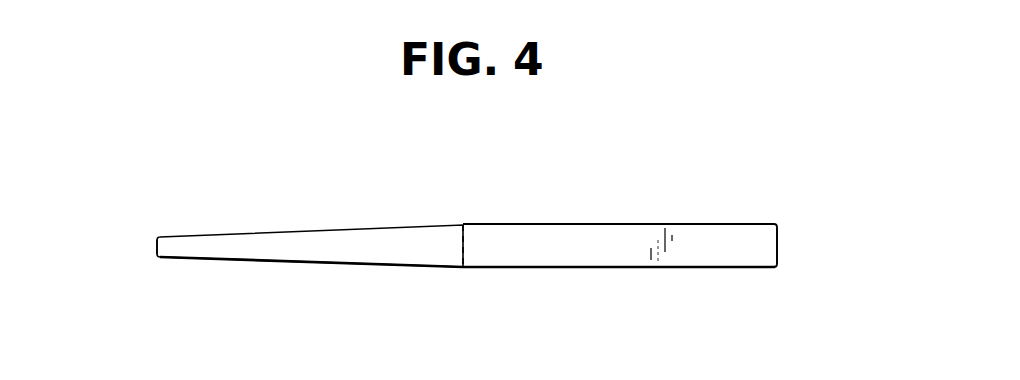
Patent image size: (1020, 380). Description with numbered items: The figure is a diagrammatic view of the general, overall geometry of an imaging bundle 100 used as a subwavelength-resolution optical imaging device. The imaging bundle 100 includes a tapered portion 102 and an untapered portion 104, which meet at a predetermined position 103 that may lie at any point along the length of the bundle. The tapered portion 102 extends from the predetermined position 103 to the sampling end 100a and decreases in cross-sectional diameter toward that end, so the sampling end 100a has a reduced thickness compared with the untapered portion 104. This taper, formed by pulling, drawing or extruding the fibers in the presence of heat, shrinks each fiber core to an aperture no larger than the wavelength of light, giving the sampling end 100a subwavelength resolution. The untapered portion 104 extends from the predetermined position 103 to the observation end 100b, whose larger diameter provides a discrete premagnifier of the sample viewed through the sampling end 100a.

The imaging bundle 100 is at (465, 228).
The sampling end 100a is at (153, 244).
The observation end 100b is at (778, 243).
The tapered portion 102 is at (263, 242).
The predetermined position 103 is at (461, 244).
The untapered portion 104 is at (714, 232).